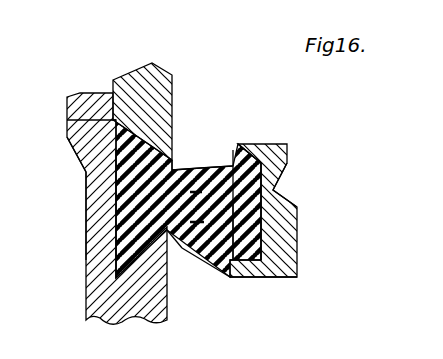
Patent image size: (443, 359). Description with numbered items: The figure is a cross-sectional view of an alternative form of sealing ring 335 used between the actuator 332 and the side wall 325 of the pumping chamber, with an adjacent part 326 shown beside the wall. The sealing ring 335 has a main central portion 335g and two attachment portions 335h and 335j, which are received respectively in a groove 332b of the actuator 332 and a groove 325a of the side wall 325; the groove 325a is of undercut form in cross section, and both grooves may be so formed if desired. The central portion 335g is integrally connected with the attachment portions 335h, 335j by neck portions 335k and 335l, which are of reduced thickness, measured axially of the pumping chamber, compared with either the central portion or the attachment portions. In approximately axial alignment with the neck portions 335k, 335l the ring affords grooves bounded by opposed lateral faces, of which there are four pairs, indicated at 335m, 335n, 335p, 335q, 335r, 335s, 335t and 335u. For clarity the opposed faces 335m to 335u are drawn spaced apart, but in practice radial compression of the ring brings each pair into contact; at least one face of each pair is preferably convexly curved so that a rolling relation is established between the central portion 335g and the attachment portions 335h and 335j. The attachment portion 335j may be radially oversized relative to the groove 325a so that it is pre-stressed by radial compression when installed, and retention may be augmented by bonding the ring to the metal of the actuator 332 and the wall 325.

The side wall of the pumping chamber 325 is at (92, 152).
The groove 325a is at (118, 208).
The flange member 326 is at (143, 100).
The actuator 332 is at (282, 257).
The groove 332b is at (297, 221).
The sealing ring 335 is at (188, 200).
The main central portion 335g is at (100, 213).
The attachment portion 335h is at (247, 208).
The attachment portion 335j is at (92, 164).
The neck portion 335k is at (275, 189).
The neck portion 335l is at (98, 187).
The lateral face 335m is at (226, 170).
The lateral face 335n is at (229, 162).
The lateral face 335p is at (265, 280).
The lateral face 335q is at (234, 258).
The lateral face 335r is at (87, 252).
The lateral face 335s is at (181, 248).
The lateral face 335t is at (172, 173).
The lateral face 335u is at (195, 170).